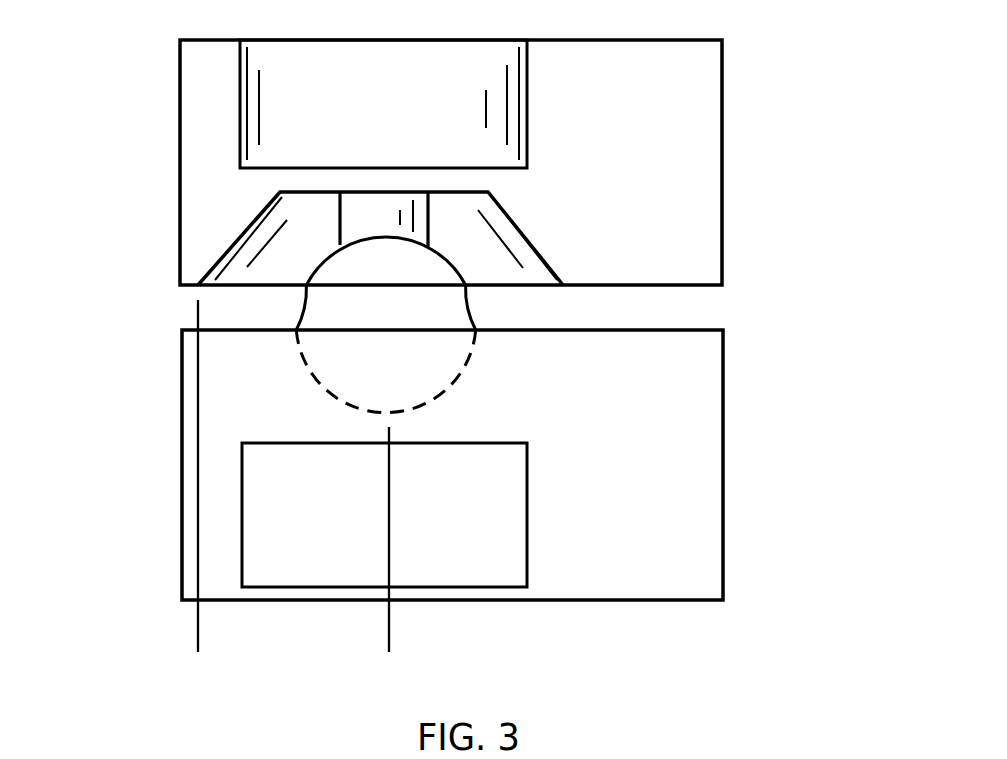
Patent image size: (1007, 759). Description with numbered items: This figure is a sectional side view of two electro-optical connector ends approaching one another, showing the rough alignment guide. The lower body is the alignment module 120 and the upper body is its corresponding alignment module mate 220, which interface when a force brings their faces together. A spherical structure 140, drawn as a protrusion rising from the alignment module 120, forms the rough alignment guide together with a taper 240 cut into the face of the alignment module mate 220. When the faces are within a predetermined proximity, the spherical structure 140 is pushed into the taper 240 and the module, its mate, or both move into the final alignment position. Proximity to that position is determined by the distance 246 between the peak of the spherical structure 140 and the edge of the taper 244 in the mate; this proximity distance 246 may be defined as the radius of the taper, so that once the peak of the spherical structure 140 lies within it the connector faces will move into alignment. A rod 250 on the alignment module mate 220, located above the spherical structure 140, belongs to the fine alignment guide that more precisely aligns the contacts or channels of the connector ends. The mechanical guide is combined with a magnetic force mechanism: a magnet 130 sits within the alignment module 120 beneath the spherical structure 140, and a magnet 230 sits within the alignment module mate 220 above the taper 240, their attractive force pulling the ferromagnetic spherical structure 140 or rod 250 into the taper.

The alignment module 120 is at (723, 487).
The magnet 130 is at (242, 518).
The spherical structure 140 is at (298, 305).
The alignment module mate 220 is at (722, 138).
The magnet 230 is at (240, 112).
The taper 240 is at (293, 235).
The edge of the taper 244 is at (535, 243).
The proximity distance 246 is at (389, 641).
The rod 250 is at (430, 218).